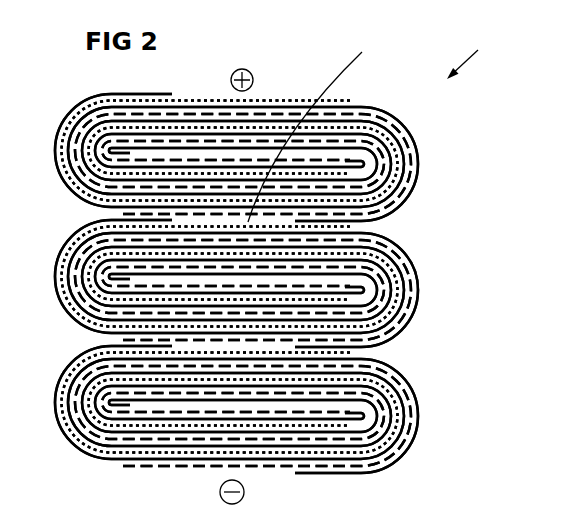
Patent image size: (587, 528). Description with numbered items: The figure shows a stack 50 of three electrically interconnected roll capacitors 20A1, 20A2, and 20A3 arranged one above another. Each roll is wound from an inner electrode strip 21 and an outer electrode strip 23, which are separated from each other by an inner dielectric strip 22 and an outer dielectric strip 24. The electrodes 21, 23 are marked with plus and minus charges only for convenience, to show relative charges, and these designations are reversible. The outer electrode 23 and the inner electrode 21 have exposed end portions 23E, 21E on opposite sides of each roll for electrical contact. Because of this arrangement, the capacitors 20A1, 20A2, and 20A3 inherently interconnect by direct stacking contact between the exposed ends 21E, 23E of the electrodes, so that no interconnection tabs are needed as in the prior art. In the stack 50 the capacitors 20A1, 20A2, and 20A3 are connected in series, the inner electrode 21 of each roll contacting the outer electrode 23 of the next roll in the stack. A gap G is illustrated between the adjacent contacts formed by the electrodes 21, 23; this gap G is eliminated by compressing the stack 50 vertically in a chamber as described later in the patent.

The roll capacitor 20A1 is at (430, 144).
The roll capacitor 20A2 is at (430, 270).
The roll capacitor 20A3 is at (430, 396).
The inner electrode strip 21 is at (381, 111).
The inner dielectric strip 22 is at (416, 180).
The outer electrode strip 23 is at (76, 233).
The outer dielectric strip 24 is at (76, 107).
The exposed end portion of outer electrode 23E is at (279, 100).
The exposed end portion of inner electrode 21E is at (162, 467).
The gap G is at (314, 129).
The stack 50 is at (477, 52).